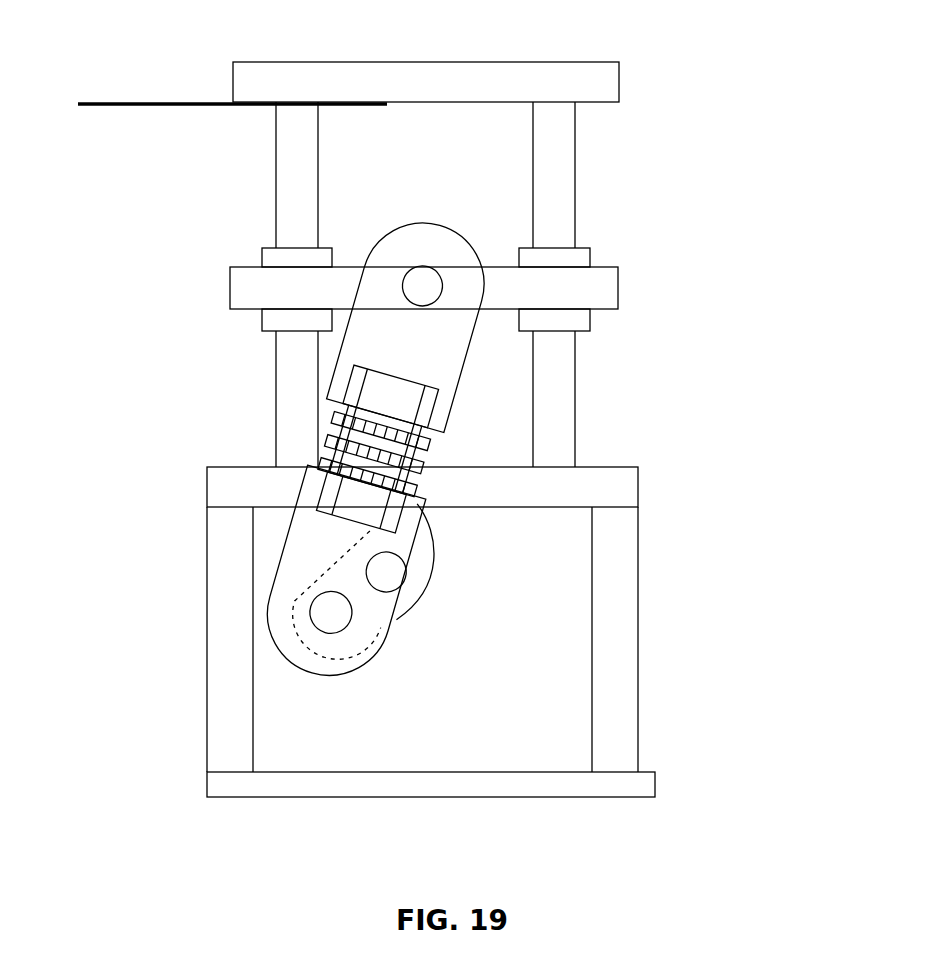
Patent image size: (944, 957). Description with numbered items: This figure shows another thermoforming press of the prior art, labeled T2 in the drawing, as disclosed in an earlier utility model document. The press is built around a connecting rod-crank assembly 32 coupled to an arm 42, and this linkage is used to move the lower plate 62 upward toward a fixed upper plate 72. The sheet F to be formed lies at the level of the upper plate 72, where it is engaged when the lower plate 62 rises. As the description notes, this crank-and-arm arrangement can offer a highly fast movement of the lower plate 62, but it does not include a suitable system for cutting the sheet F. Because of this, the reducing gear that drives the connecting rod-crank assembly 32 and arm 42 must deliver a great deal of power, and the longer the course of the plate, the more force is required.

The upper plate 72 is at (332, 88).
The sheet F is at (210, 106).
The test fixture T2 is at (697, 137).
The lower plate 62 is at (583, 286).
The connecting rod-crank assembly 32 is at (418, 583).
The arm 42 is at (317, 538).